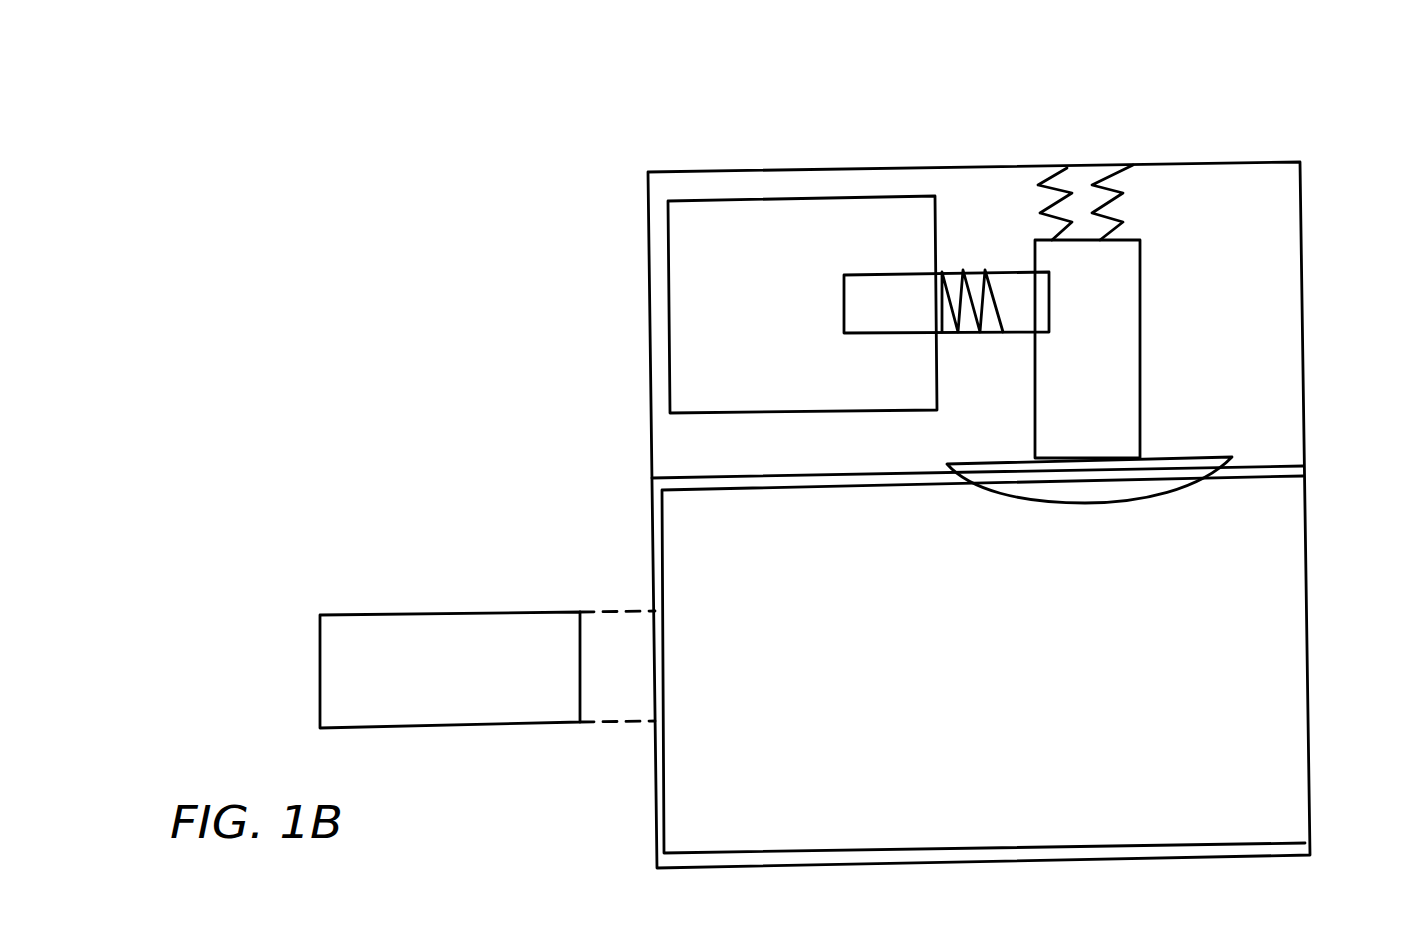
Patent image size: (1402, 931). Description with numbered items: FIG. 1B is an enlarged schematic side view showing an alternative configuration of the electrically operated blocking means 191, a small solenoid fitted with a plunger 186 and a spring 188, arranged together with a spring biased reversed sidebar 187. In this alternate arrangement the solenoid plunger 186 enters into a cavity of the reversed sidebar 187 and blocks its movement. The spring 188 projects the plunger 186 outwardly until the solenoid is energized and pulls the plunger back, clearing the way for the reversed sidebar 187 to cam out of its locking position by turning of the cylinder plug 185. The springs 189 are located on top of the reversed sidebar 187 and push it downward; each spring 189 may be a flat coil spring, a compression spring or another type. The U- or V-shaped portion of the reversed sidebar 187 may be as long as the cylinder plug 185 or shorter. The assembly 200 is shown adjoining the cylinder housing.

The probe module 200 is at (424, 667).
The electrically operated blocking means 191 is at (792, 235).
The spring 188 is at (974, 272).
The plunger 186 is at (1009, 292).
The reversed sidebar 187 is at (1117, 425).
The springs 189 is at (1062, 166).
The cylinder plug 185 is at (1249, 507).